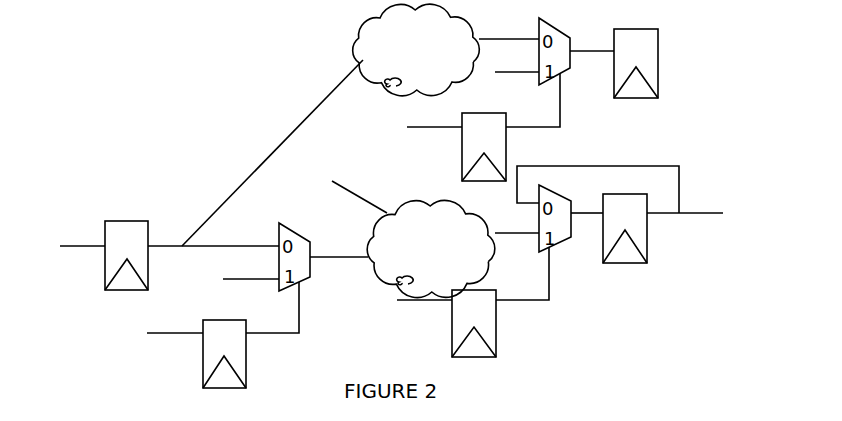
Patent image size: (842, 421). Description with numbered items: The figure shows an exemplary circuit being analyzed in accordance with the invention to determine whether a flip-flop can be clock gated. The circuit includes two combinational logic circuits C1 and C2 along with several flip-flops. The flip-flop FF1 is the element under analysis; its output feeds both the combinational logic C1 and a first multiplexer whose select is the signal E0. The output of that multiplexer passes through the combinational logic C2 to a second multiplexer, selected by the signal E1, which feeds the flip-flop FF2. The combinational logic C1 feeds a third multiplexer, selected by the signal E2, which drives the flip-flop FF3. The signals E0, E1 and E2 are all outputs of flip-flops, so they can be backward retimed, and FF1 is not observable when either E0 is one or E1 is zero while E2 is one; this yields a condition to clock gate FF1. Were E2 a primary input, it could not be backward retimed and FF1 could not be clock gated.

The flip-flop FF1 is at (127, 241).
The flip-flop FF2 is at (625, 240).
The flip-flop FF3 is at (636, 75).
The signal E0 is at (244, 351).
The signal E1 is at (493, 319).
The signal E2 is at (504, 143).
The combinational logic circuit C1 is at (416, 50).
The combinational logic circuit C2 is at (431, 248).